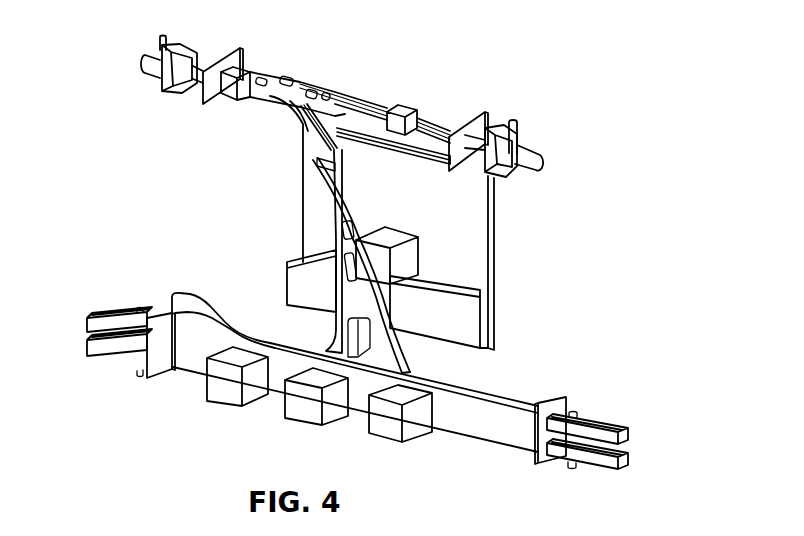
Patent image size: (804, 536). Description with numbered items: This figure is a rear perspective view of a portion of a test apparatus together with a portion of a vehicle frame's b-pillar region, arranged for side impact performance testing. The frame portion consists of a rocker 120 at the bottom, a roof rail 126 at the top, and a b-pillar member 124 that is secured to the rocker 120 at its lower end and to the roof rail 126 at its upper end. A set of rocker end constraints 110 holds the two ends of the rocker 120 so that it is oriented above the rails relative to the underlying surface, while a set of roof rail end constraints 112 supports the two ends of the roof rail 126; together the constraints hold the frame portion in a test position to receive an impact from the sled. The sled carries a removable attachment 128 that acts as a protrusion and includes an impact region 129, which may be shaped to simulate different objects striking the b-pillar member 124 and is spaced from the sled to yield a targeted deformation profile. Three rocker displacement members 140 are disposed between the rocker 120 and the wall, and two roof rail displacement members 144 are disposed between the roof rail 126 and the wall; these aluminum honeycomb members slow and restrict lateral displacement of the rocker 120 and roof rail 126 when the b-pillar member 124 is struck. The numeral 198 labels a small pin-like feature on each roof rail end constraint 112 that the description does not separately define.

The rocker end constraint 110 is at (113, 298).
The roof rail end constraint 112 is at (199, 39).
The rocker 120 is at (483, 394).
The b-pillar member 124 is at (320, 177).
The roof rail 126 is at (348, 92).
The attachment 128 is at (497, 185).
The impact region 129 is at (295, 285).
The rocker displacement member 140 is at (377, 428).
The roof rail displacement member 144 is at (240, 70).
The pin 198 is at (148, 60).